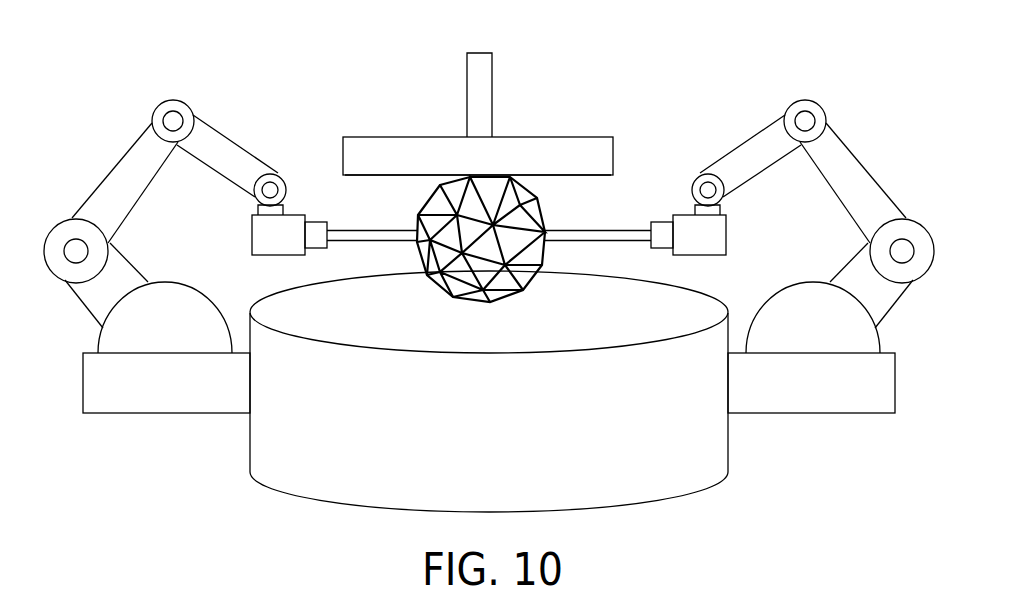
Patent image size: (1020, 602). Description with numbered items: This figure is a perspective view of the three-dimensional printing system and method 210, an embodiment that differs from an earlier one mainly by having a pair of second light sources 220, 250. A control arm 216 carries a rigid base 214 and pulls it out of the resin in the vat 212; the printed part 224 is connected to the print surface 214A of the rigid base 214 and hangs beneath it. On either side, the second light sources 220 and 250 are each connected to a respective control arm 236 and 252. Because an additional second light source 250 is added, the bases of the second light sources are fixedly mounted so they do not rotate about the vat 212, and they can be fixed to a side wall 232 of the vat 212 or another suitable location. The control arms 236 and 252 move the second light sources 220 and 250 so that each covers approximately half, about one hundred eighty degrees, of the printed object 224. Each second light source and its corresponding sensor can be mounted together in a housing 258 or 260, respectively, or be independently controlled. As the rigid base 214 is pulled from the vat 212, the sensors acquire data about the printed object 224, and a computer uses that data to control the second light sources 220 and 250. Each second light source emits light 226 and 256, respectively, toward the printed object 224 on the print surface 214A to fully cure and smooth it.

The 3D printing system and method 210 is at (237, 60).
The vat 212 is at (248, 445).
The rigid base 214 is at (613, 150).
The print surface 214A is at (550, 177).
The control arm 216 is at (492, 91).
The second light source 220 is at (317, 222).
The printed part 224 is at (503, 302).
The light 226 is at (372, 240).
The side wall 232 is at (652, 460).
The control arm 236 is at (107, 170).
The second light source 250 is at (660, 248).
The control arm 252 is at (865, 160).
The light 256 is at (603, 240).
The housing 258 is at (252, 238).
The housing 260 is at (725, 233).